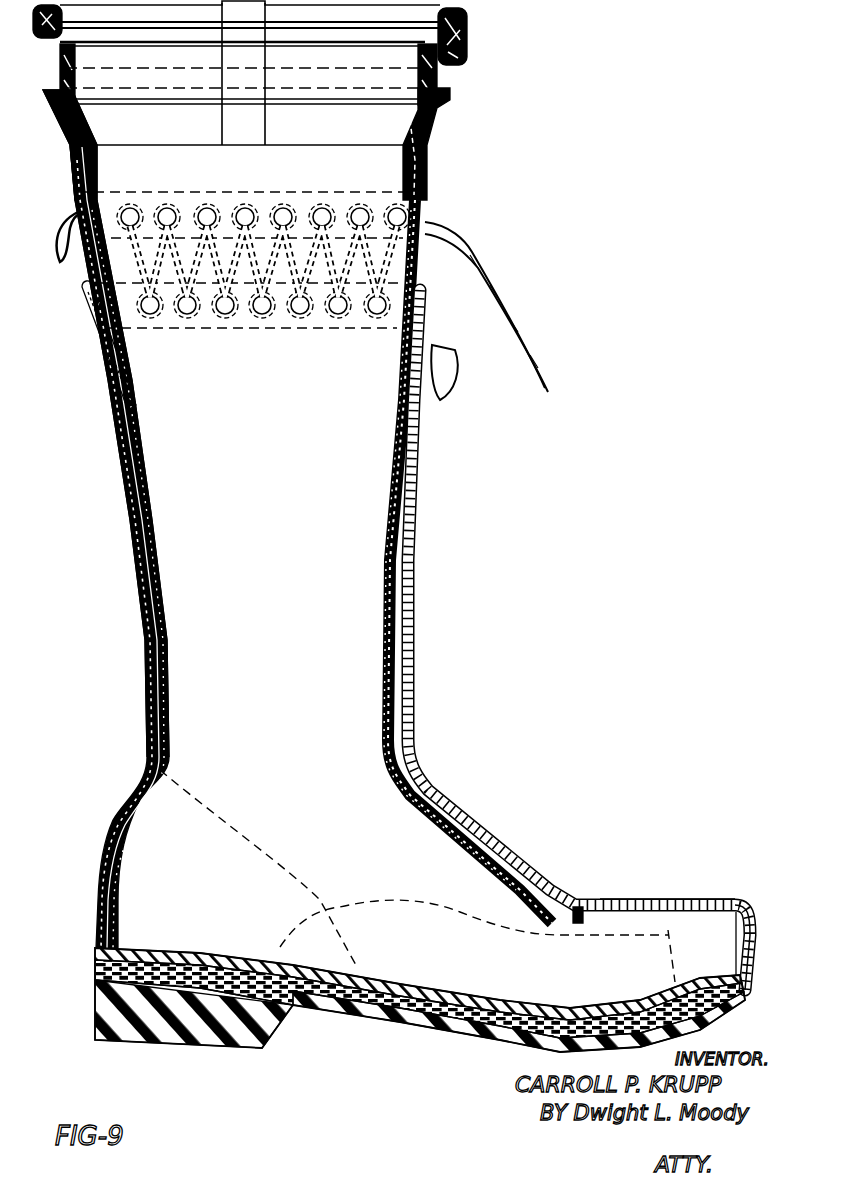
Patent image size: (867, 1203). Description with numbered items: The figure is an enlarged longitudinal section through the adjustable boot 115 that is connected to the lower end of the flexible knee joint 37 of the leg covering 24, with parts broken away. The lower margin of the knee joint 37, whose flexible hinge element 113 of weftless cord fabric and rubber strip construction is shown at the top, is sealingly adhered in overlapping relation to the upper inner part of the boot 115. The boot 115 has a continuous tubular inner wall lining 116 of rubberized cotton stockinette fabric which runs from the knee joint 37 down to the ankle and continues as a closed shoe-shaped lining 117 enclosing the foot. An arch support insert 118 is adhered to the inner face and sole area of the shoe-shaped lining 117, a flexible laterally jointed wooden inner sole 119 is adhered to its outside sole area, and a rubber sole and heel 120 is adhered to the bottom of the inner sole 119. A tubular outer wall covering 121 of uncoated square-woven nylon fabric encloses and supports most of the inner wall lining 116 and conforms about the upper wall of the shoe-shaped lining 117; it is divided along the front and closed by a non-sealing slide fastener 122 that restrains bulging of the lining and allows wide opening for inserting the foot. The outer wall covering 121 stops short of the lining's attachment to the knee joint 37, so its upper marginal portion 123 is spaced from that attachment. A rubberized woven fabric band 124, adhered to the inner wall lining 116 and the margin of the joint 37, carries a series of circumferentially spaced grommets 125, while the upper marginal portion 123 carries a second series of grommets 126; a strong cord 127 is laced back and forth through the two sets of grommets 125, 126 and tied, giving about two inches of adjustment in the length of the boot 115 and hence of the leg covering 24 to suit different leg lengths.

The leg covering 24 is at (497, 30).
The flexible knee joint 37 is at (466, 71).
The flexible hinge element 113 is at (268, 70).
The boot 115 is at (124, 518).
The inner wall lining 116 is at (140, 470).
The shoe-shaped lining 117 is at (400, 993).
The arch support insert 118 is at (360, 977).
The inner sole 119 is at (358, 1000).
The rubber sole and heel 120 is at (440, 1040).
The outer wall covering 121 is at (138, 577).
The slide fastener 122 is at (418, 650).
The upper marginal portion 123 is at (92, 310).
The fabric band 124 is at (428, 175).
The grommets 125 is at (196, 202).
The grommets 126 is at (332, 352).
The cord 127 is at (62, 243).